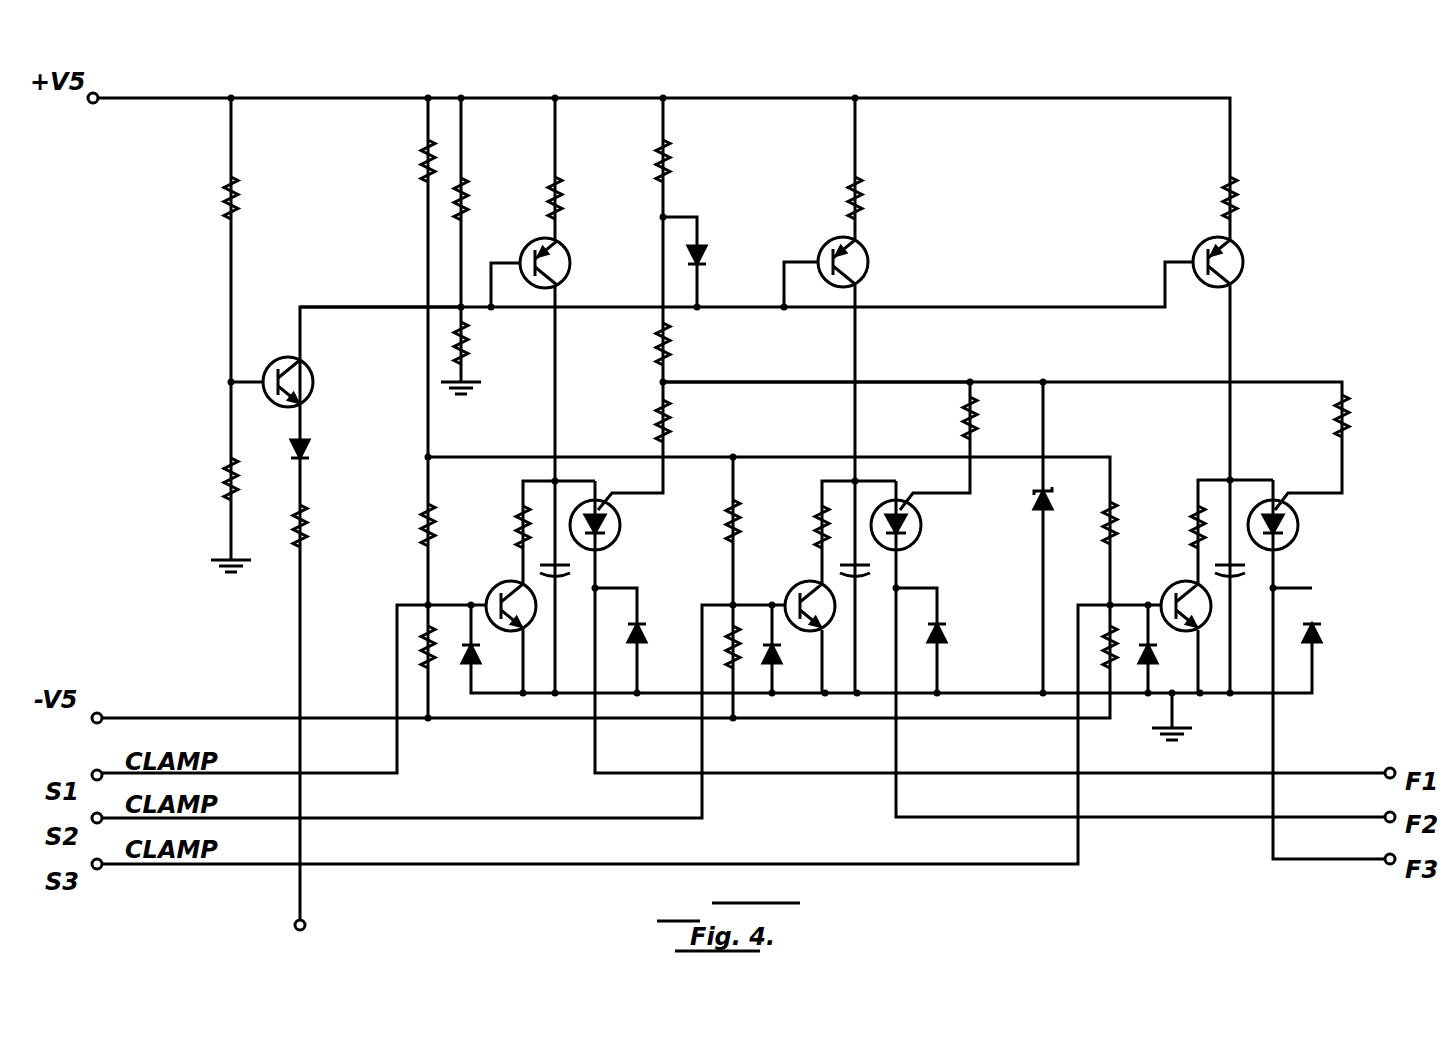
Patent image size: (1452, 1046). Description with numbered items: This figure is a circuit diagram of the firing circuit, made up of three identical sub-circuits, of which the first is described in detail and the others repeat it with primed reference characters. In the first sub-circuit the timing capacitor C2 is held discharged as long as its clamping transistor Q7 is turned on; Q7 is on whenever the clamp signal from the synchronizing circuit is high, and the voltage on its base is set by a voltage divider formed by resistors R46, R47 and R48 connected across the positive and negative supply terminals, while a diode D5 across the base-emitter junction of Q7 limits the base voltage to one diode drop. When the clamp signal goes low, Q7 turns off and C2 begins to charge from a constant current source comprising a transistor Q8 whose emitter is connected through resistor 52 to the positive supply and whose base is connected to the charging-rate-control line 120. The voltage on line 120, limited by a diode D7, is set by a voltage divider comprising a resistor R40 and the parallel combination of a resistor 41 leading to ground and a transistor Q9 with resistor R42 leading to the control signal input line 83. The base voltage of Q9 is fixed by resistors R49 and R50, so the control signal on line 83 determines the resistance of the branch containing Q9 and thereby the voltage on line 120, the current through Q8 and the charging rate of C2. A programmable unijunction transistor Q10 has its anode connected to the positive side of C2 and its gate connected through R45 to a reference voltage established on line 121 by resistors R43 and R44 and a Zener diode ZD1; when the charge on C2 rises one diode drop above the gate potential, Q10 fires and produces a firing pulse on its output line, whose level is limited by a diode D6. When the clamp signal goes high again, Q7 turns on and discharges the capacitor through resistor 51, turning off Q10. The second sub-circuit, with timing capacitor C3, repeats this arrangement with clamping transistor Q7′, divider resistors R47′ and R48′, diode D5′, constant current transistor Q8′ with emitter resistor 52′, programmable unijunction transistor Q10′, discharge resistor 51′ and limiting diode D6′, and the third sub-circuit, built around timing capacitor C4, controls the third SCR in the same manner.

The resistor R49 is at (222, 200).
The resistor R46 is at (420, 158).
The resistor R40 is at (468, 200).
The resistor 52 is at (562, 200).
The transistor Q8 is at (570, 262).
The resistor R43 is at (670, 168).
The diode D7 is at (705, 250).
The resistor 52′ is at (863, 200).
The transistor Q8′ is at (868, 262).
The charging-rate-control signal line 120 is at (358, 300).
The transistor Q9 is at (312, 370).
The resistor 41 is at (468, 345).
The resistor R44 is at (656, 342).
The reference voltage line 121 is at (742, 380).
The resistor R45 is at (656, 418).
The resistor R50 is at (224, 470).
The resistor R42 is at (308, 530).
The resistor R47 is at (425, 540).
The resistor 51 is at (518, 522).
The clamping transistor Q7 is at (496, 588).
The programmable unijunction transistor Q10 is at (622, 525).
The timing capacitor C2 is at (575, 572).
The diode D6 is at (646, 628).
The resistor R48 is at (420, 650).
The diode D5 is at (478, 660).
The resistor 51′ is at (818, 522).
The resistor R47′ is at (728, 540).
The clamping transistor Q7′ is at (796, 588).
The programmable unijunction transistor Q10′ is at (922, 525).
The timing capacitor C3 is at (875, 572).
The diode D6′ is at (946, 628).
The resistor R48′ is at (726, 650).
The diode D5′ is at (778, 662).
The Zener diode ZD1 is at (1050, 490).
The timing capacitor C4 is at (1250, 572).
The control signal input line 83 is at (306, 908).